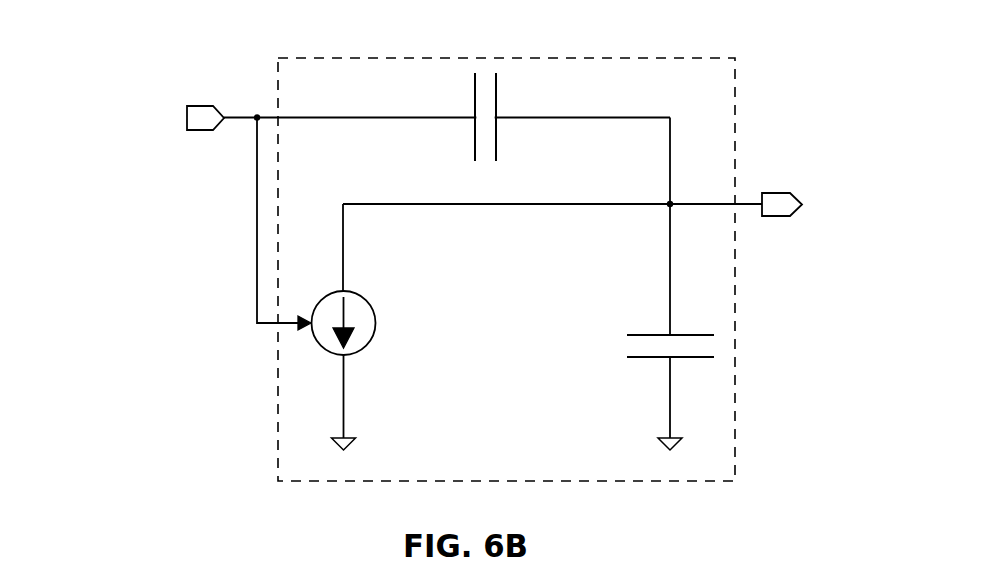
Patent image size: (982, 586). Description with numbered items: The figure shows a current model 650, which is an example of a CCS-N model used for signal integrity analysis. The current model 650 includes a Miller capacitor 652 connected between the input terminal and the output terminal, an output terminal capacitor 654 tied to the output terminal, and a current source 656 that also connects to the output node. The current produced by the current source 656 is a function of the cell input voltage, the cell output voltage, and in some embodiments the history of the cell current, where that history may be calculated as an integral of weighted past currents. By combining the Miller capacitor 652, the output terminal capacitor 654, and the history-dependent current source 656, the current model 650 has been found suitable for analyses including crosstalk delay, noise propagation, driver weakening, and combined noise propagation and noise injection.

The current model 650 is at (168, 50).
The Miller capacitor 652 is at (475, 73).
The output terminal capacitor 654 is at (640, 333).
The current source 656 is at (378, 328).